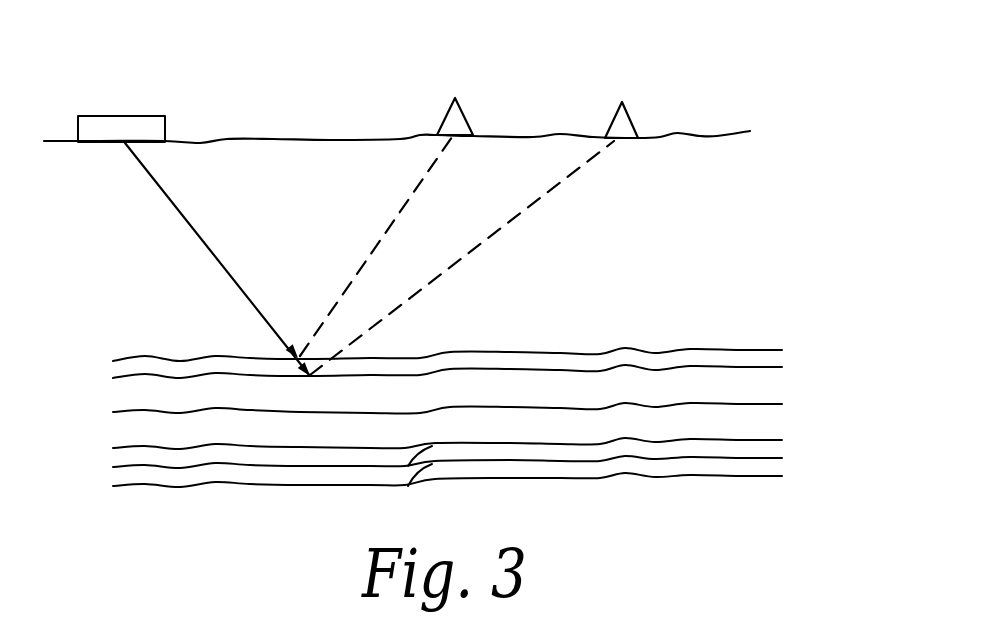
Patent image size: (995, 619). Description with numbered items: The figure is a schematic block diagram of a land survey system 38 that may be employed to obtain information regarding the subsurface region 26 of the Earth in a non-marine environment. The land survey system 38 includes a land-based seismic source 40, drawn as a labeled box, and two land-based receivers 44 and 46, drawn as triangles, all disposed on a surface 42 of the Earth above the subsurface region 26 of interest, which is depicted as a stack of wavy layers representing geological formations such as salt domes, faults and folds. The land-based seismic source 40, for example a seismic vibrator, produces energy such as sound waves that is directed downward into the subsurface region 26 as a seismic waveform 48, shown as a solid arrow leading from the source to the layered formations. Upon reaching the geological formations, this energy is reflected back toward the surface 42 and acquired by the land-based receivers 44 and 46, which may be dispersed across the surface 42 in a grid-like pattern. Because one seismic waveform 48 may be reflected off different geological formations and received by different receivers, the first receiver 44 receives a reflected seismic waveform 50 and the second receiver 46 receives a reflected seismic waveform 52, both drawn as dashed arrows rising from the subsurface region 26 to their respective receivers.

The subsurface region 26 is at (98, 345).
The land survey system 38 is at (633, 30).
The land-based seismic source 40 is at (140, 116).
The surface 42 is at (330, 138).
The land-based receiver 44 is at (460, 108).
The land-based receiver 46 is at (632, 115).
The seismic waveform 48 is at (172, 198).
The reflected seismic waveform 50 is at (397, 217).
The reflected seismic waveform 52 is at (538, 203).